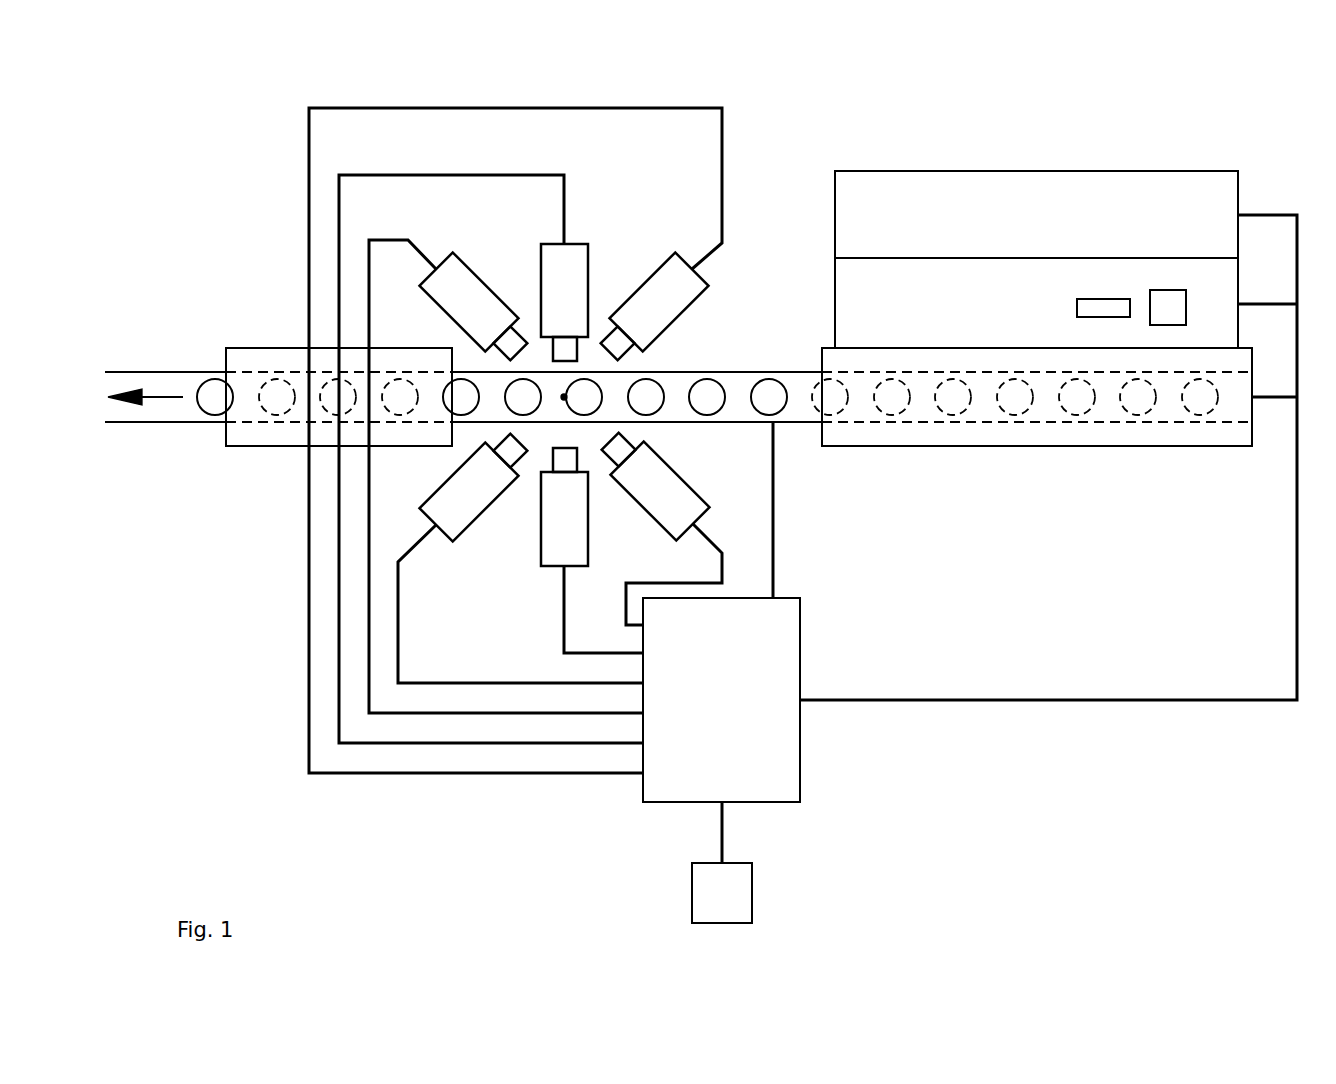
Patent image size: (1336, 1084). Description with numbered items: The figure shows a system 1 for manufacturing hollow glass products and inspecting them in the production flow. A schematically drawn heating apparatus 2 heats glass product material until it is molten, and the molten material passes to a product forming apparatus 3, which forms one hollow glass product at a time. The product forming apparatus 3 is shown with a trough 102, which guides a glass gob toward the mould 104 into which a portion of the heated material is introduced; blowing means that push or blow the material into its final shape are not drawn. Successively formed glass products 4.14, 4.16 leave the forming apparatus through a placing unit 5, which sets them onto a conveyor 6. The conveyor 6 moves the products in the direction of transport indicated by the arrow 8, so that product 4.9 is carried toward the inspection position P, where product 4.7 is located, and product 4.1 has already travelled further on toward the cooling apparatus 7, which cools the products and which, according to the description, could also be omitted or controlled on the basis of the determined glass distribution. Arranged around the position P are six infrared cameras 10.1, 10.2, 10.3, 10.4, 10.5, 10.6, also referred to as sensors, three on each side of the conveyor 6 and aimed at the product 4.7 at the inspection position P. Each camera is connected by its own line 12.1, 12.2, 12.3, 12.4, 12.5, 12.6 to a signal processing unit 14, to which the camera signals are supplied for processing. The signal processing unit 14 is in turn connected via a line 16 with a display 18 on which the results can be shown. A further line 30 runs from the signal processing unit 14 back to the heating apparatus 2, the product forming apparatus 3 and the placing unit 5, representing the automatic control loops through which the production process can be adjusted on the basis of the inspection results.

The system 1 is at (243, 730).
The heating apparatus 2 is at (988, 238).
The product forming apparatus 3 is at (988, 325).
The hollow glass product 4.1 is at (210, 382).
The hollow glass product 4.7 is at (600, 381).
The hollow glass product 4.9 is at (722, 380).
The hollow glass product 4.14 is at (1017, 400).
The hollow glass product 4.16 is at (1139, 400).
The placing unit 5 is at (1203, 436).
The conveyor 6 is at (804, 372).
The cooling apparatus 7 is at (246, 362).
The arrow 8 is at (160, 397).
The infrared camera 10.1 is at (458, 290).
The infrared camera 10.2 is at (577, 256).
The infrared camera 10.3 is at (672, 290).
The infrared camera 10.4 is at (683, 508).
The infrared camera 10.5 is at (553, 542).
The infrared camera 10.6 is at (458, 508).
The line 12.1 is at (386, 238).
The line 12.2 is at (450, 174).
The line 12.3 is at (513, 107).
The line 12.4 is at (715, 531).
The line 12.5 is at (563, 636).
The line 12.6 is at (431, 672).
The signal processing unit 14 is at (736, 710).
The line 16 is at (724, 832).
The display 18 is at (736, 904).
The line 30 is at (1048, 702).
The trough 102 is at (1103, 308).
The mould 104 is at (1168, 310).
The position P is at (565, 400).